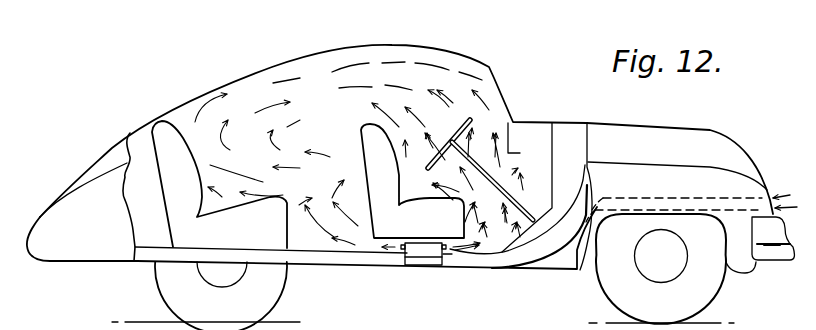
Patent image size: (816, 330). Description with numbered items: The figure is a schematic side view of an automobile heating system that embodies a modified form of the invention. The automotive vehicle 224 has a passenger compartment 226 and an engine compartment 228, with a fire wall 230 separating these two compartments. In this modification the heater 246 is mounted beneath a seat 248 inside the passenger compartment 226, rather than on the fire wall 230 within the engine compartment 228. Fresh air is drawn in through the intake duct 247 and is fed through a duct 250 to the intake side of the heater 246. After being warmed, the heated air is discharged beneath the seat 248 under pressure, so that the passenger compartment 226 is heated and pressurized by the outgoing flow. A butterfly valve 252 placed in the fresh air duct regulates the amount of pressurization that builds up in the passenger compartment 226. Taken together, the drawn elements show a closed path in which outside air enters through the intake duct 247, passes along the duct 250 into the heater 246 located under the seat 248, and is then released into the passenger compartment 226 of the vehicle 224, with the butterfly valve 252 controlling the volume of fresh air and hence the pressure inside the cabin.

The automotive vehicle 224 is at (452, 53).
The passenger compartment 226 is at (312, 63).
The engine compartment 228 is at (577, 137).
The fire wall 230 is at (554, 131).
The heater 246 is at (432, 272).
The intake duct 247 is at (702, 206).
The seat 248 is at (362, 132).
The duct 250 is at (531, 256).
The butterfly valve 252 is at (617, 207).